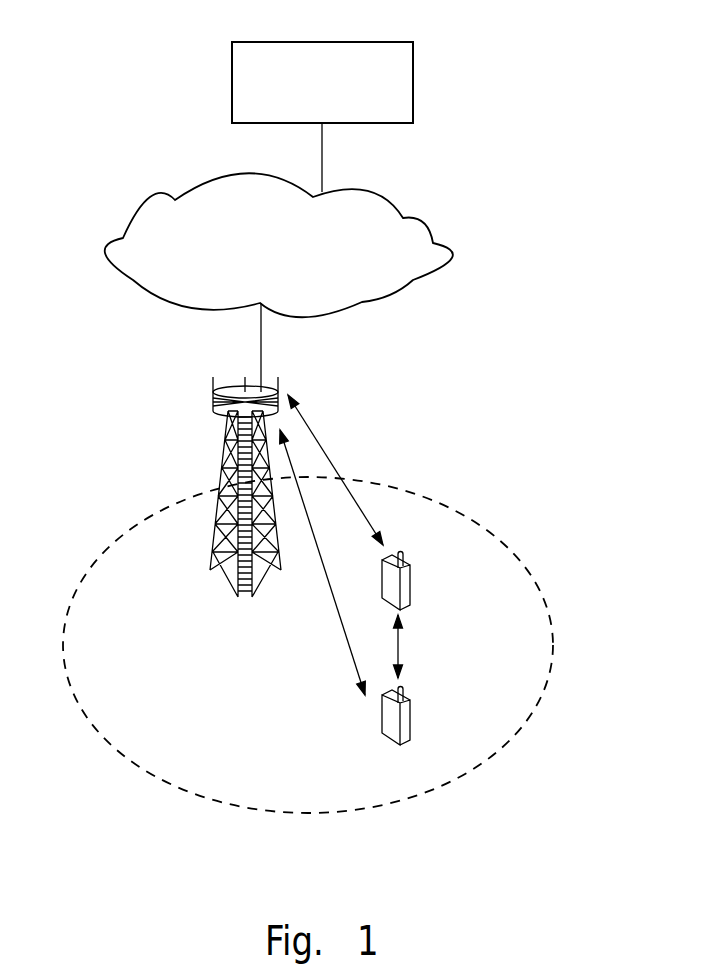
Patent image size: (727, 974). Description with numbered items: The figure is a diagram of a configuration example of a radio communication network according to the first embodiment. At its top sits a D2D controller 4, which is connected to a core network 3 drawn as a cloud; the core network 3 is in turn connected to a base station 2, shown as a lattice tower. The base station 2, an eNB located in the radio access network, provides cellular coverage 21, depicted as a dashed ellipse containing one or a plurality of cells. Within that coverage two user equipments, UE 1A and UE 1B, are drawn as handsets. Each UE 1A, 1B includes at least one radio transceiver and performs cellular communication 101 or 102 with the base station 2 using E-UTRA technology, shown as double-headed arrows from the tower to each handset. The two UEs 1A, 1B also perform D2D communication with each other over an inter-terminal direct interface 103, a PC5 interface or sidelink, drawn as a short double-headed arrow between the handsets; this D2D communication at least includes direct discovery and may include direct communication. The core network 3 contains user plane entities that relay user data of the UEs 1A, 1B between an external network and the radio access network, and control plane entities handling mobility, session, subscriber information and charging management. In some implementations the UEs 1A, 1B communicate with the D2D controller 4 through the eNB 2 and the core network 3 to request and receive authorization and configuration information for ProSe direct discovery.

The D2D controller 4 is at (354, 40).
The core network 3 is at (202, 182).
The base station 2 is at (228, 448).
The cellular coverage 21 is at (452, 505).
The cellular communication 101 is at (317, 440).
The cellular communication 102 is at (323, 563).
The inter-terminal direct interface 103 is at (432, 684).
The UE 1A is at (407, 583).
The UE 1B is at (382, 725).